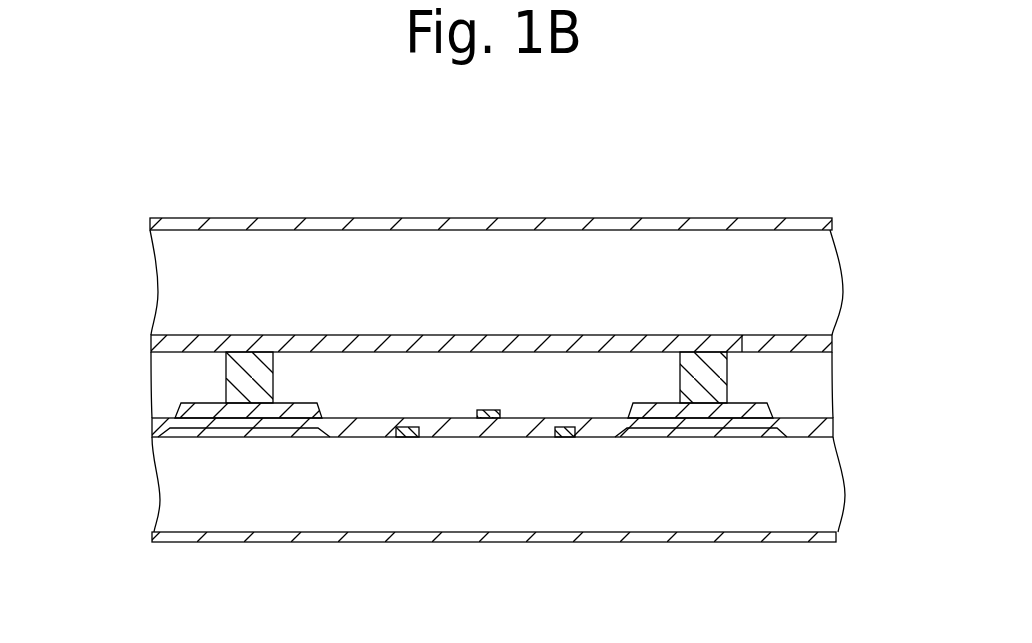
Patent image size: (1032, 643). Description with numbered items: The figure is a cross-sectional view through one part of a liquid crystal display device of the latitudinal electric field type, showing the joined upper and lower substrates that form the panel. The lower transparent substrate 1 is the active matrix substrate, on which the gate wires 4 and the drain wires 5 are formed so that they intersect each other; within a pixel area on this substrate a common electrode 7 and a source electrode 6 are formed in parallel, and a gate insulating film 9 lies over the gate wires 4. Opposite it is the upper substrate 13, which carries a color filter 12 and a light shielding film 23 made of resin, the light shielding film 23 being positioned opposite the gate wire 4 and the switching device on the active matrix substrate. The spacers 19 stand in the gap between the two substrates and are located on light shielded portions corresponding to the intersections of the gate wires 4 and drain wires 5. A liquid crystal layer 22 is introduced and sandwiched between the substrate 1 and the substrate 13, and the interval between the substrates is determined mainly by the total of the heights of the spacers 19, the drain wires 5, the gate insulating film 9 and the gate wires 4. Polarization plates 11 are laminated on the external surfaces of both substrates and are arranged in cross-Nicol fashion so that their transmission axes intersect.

The substrate 1 is at (820, 498).
The gate wires 4 is at (778, 437).
The drain wires 5 is at (777, 406).
The source electrode 6 is at (487, 418).
The common electrode 7 is at (405, 437).
The gate insulating film 9 is at (820, 427).
The polarization plates 11 is at (148, 222).
The color filter 12 is at (507, 350).
The substrate 13 is at (813, 272).
The spacers 19 is at (232, 387).
The liquid crystal layer 22 is at (810, 372).
The light shielding film 23 is at (742, 345).